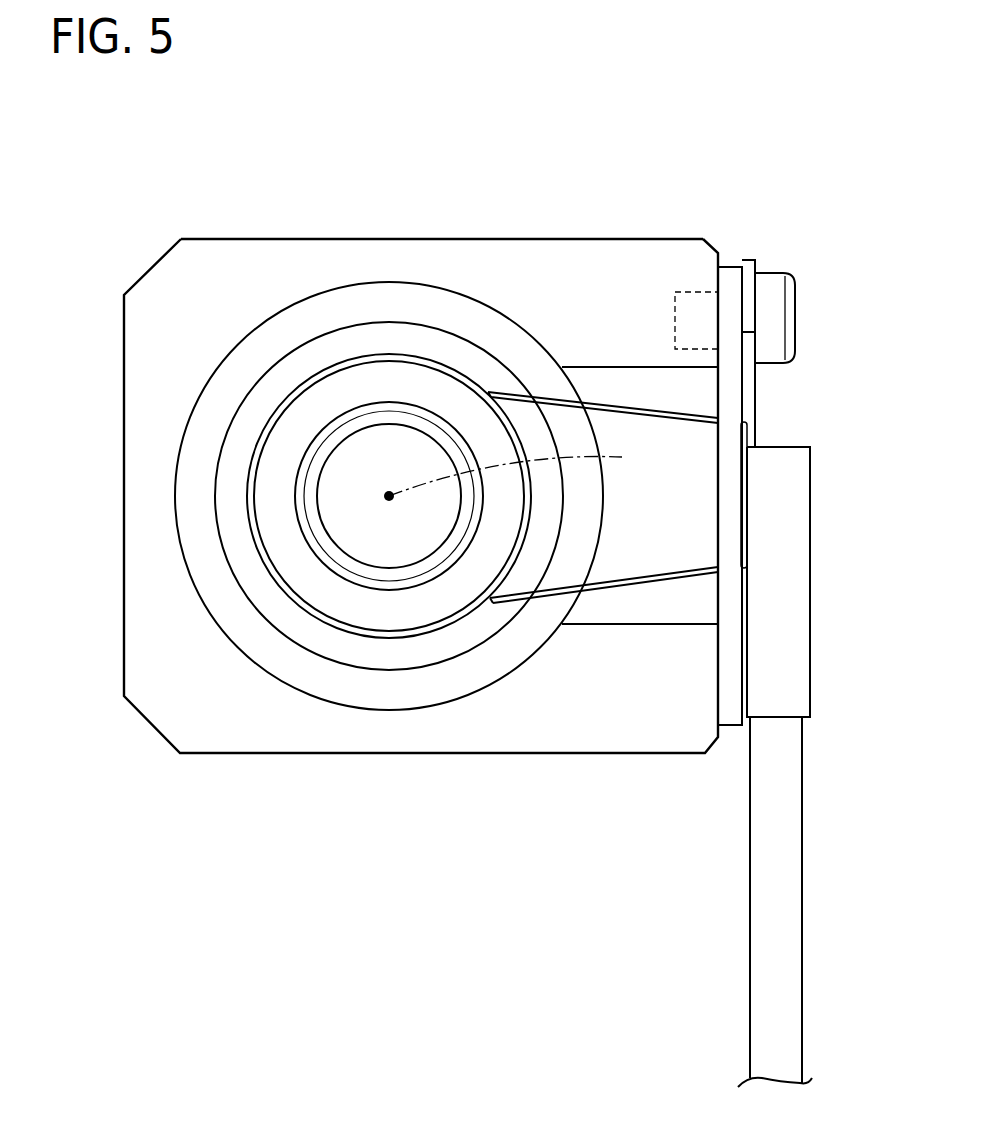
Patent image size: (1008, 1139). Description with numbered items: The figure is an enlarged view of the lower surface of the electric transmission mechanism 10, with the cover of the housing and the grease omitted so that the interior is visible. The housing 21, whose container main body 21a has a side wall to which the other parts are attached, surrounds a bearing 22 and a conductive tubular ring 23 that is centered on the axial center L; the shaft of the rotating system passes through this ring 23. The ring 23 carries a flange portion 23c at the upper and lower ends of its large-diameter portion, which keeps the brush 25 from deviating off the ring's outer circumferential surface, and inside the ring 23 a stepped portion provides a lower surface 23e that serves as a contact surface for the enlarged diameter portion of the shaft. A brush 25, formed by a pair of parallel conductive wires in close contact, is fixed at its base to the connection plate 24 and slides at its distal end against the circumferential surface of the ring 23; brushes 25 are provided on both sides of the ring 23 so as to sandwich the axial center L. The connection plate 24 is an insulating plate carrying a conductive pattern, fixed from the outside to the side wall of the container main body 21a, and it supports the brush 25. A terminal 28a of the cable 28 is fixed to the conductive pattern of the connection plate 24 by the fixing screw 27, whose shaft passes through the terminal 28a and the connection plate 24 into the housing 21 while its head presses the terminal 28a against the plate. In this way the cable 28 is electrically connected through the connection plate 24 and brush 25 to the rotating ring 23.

The electric transmission mechanism 10 is at (703, 195).
The housing 21 is at (112, 372).
The container main body 21a is at (317, 255).
The bearing 22 is at (457, 345).
The ring 23 is at (455, 640).
The flange portion 23c is at (318, 587).
The lower surface of the stepped portion 23e is at (323, 535).
The connection plate 24 is at (730, 275).
The brush 25 is at (622, 405).
The fixing screw 27 is at (765, 334).
The cable 28 is at (826, 518).
The terminal 28a is at (770, 262).
The axial center L is at (513, 469).